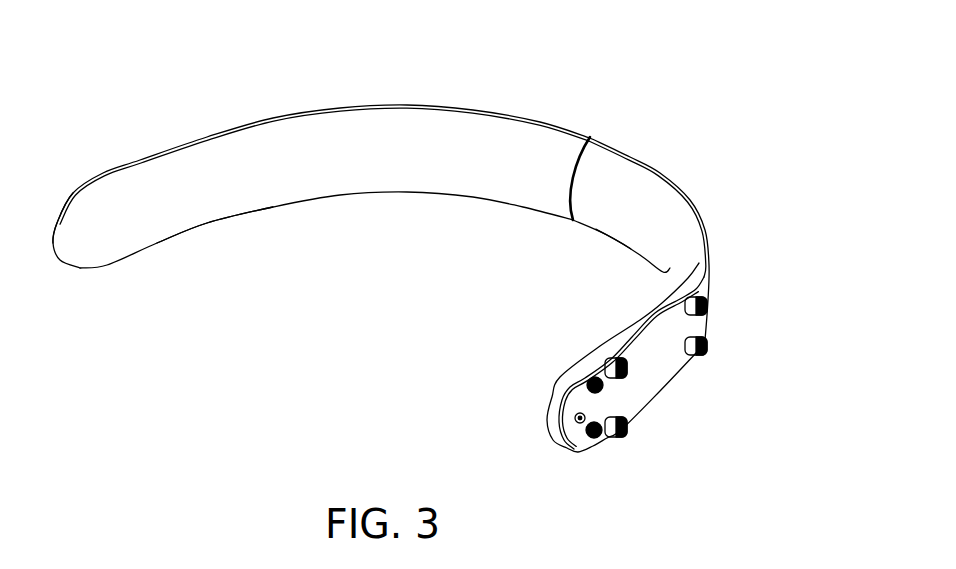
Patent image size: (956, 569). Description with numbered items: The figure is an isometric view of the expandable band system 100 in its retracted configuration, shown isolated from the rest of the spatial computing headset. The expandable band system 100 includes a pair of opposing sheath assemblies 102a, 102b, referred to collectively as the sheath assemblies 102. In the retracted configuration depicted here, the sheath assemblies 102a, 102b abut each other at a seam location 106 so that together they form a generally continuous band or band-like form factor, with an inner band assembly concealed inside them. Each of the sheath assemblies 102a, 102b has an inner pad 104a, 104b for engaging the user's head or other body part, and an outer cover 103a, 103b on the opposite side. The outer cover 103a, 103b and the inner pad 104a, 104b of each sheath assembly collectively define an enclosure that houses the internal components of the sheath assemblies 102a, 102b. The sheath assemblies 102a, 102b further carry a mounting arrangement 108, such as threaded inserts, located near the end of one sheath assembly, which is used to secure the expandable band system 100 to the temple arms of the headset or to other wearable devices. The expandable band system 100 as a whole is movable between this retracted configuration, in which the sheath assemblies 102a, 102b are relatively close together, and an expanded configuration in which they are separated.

The expandable band system 100 is at (539, 78).
The sheath assemblies 102 is at (646, 145).
The first sheath assembly 102a is at (244, 108).
The second sheath assembly 102b is at (727, 202).
The outer cover 103a is at (187, 142).
The outer cover 103b is at (643, 375).
The inner pad 104a is at (192, 198).
The inner pad 104b is at (630, 222).
The seam location 106 is at (570, 182).
The mounting arrangement 108 is at (708, 308).